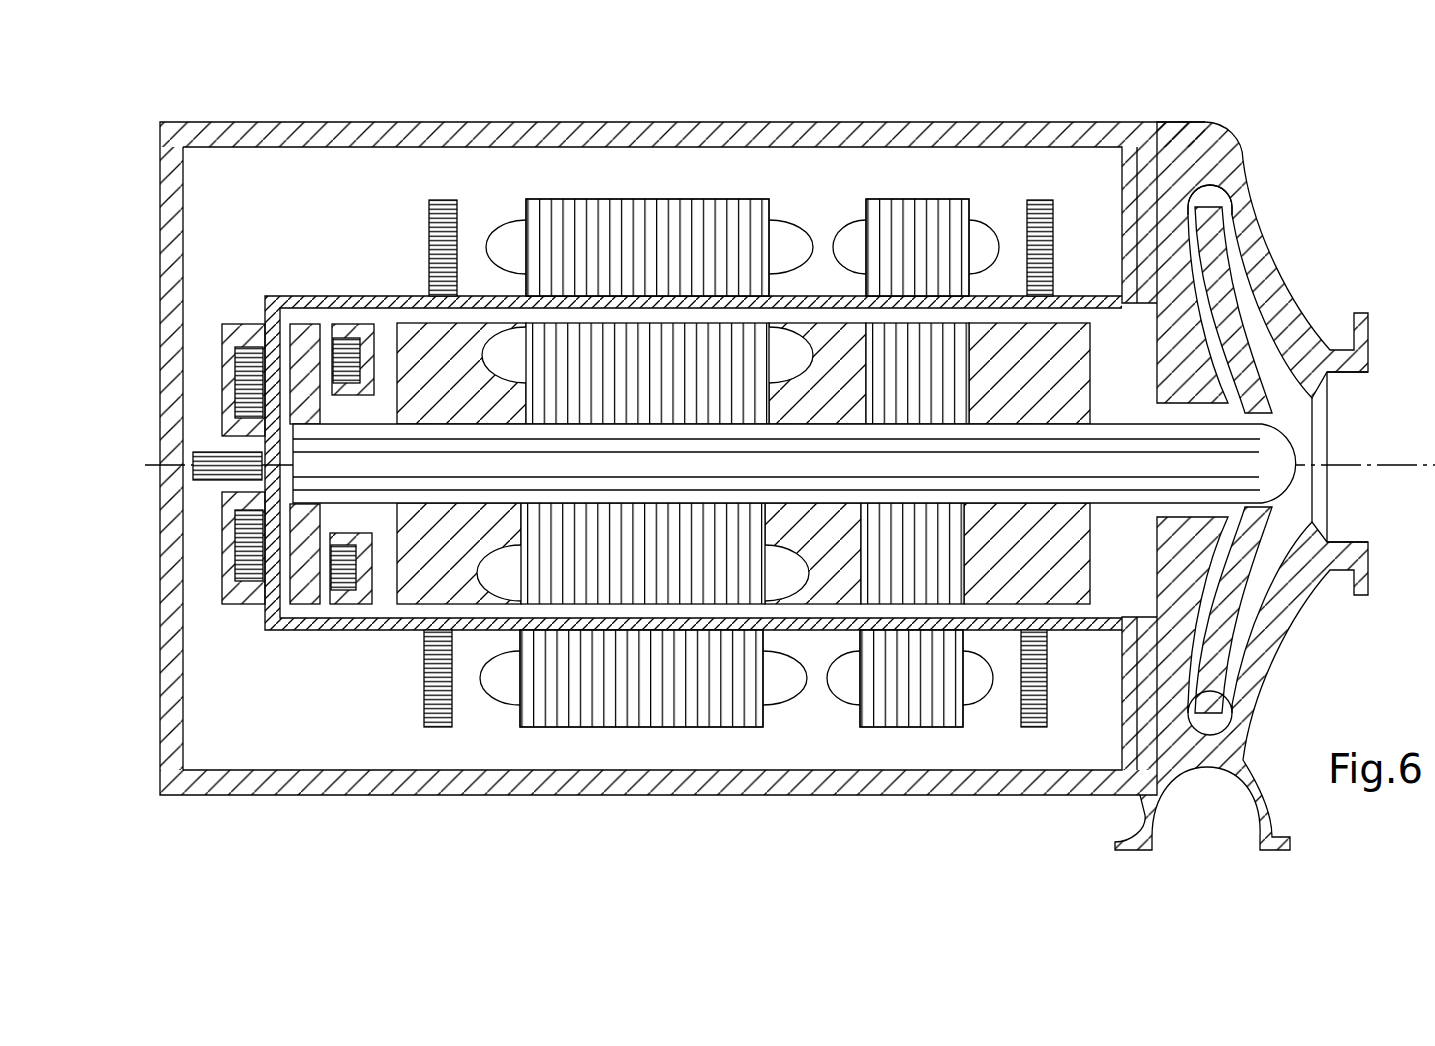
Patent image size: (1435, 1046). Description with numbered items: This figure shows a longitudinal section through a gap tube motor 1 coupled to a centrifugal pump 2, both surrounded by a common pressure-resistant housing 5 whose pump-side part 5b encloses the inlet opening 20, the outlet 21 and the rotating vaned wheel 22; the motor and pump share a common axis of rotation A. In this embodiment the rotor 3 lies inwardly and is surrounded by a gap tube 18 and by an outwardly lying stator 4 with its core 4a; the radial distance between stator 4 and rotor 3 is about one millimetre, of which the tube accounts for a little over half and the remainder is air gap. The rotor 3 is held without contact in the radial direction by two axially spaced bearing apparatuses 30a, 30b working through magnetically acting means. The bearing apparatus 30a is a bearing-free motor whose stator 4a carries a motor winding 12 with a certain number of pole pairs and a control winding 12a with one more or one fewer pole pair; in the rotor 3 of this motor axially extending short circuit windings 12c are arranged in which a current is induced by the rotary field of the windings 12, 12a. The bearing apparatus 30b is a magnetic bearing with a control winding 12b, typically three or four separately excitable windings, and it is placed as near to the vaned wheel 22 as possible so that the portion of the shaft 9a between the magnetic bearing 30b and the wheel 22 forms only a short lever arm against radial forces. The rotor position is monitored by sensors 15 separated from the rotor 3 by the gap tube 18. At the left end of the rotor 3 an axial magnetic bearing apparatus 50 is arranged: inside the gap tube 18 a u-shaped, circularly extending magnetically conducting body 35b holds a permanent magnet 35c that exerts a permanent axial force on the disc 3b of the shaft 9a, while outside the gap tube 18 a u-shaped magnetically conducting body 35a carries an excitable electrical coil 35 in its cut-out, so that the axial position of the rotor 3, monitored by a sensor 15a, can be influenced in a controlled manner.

The gap tube motor 1 is at (147, 86).
The centrifugal pump 2 is at (1434, 86).
The rotor 3 is at (413, 592).
The disc 3b is at (283, 605).
The stator 4 is at (701, 705).
The stator core 4a is at (553, 705).
The pressure-resistant housing 5 is at (403, 778).
The housing part 5b is at (1243, 247).
The shaft 9a is at (1127, 475).
The motor winding 12 is at (783, 243).
The control winding 12a is at (508, 258).
The control winding 12b is at (973, 243).
The short circuit winding 12c is at (518, 367).
The sensors 15 is at (442, 227).
The sensor 15a is at (190, 477).
The gap tube 18 is at (337, 304).
The inlet opening 20 is at (1348, 507).
The outlet 21 is at (1207, 192).
The vaned wheel 22 is at (1280, 330).
The bearing apparatus 30a is at (808, 858).
The bearing apparatus 30b is at (978, 858).
The electrical coil 35 is at (237, 373).
The magnetically conducting body 35a is at (238, 337).
The magnetically conducting body 35b is at (347, 330).
The permanent magnet 35c is at (333, 348).
The axial magnetic bearing apparatus 50 is at (371, 858).
The axis of rotation A is at (1387, 463).